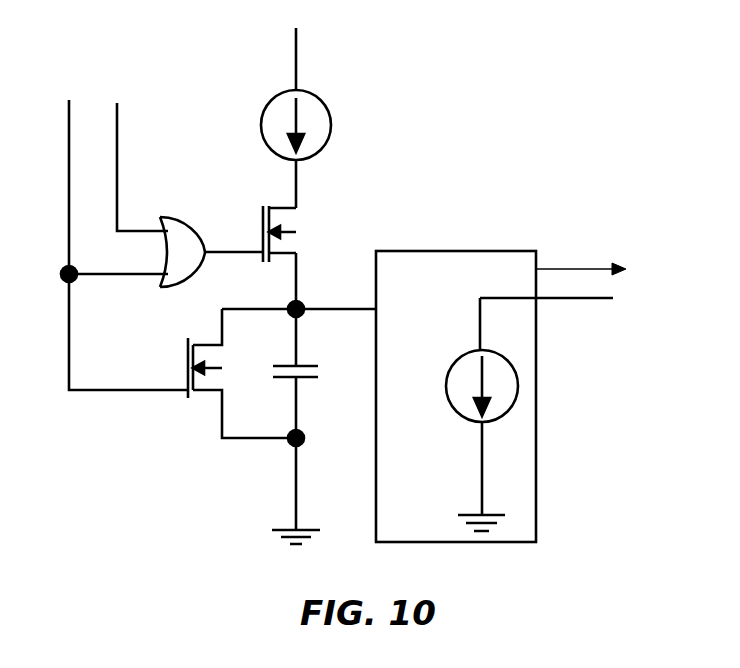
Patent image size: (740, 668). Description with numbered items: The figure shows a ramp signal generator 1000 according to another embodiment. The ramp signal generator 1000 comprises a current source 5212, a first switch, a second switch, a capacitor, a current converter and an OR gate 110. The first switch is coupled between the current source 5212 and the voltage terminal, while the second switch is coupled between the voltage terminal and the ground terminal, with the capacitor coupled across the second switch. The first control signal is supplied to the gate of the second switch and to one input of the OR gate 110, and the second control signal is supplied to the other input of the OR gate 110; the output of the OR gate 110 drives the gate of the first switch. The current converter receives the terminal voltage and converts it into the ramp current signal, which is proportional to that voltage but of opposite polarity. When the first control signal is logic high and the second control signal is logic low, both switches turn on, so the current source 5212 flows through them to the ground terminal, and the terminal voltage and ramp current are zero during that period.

The ramp signal generator 1000 is at (548, 122).
The current source 5212 is at (331, 120).
The OR gate 110 is at (177, 218).